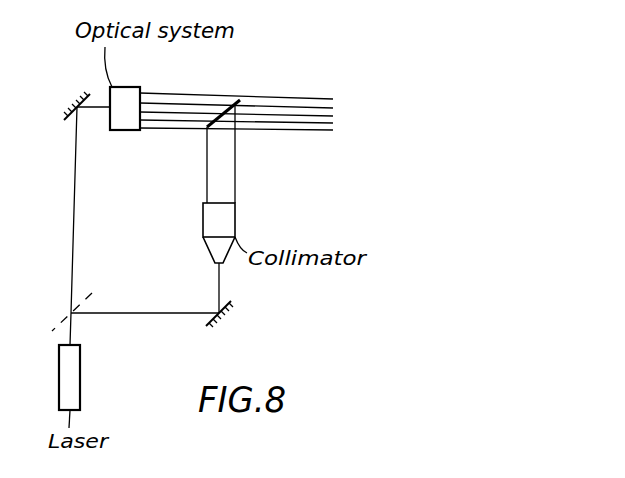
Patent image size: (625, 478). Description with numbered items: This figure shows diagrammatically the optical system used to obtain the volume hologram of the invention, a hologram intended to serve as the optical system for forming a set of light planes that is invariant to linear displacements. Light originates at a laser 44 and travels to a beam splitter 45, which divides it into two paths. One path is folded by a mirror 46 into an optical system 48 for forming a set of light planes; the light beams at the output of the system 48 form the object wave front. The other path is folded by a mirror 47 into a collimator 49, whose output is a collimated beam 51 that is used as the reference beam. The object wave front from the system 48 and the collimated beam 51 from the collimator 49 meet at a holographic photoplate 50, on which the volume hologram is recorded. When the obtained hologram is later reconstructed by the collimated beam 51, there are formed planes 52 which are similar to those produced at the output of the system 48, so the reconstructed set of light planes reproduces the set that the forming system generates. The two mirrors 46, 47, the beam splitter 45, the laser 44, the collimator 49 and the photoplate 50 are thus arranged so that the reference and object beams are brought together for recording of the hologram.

The laser 44 is at (73, 385).
The beam splitter 45 is at (67, 317).
The mirror 46 is at (66, 104).
The mirror 47 is at (222, 322).
The optical system for forming a set of light planes 48 is at (133, 78).
The collimator 49 is at (229, 225).
The holographic photoplate 50 is at (222, 100).
The collimated beam 51 is at (229, 178).
The planes 52 is at (300, 131).